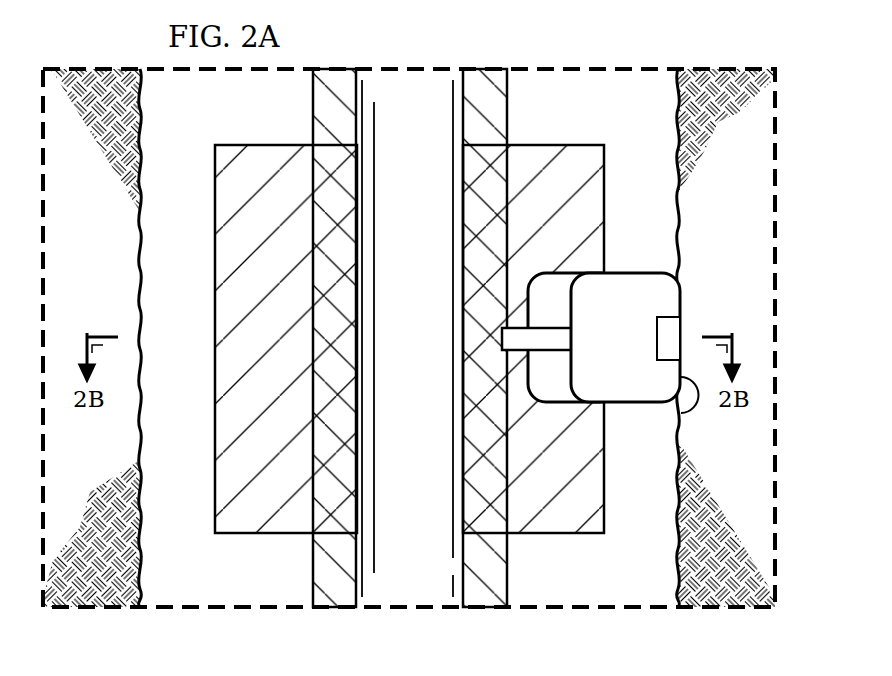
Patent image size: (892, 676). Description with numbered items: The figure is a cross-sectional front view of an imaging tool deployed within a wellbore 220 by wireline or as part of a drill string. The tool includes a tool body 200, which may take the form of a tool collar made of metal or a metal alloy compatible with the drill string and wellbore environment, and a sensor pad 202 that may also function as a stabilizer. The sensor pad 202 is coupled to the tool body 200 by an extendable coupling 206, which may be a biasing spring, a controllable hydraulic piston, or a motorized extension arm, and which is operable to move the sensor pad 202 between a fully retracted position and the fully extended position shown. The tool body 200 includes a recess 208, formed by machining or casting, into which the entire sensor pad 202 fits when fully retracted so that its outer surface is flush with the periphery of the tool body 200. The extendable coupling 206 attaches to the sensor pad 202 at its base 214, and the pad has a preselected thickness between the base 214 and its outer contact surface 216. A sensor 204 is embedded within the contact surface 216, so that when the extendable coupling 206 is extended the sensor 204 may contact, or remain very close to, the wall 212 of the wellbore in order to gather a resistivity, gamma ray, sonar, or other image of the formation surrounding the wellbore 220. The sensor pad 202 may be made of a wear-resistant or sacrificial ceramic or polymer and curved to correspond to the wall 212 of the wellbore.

The tool body 200 is at (534, 152).
The sensor pad 202 is at (633, 283).
The sensor 204 is at (672, 327).
The extendable coupling 206 is at (512, 338).
The recess 208 is at (547, 287).
The wall of the wellbore 212 is at (677, 557).
The base 214 is at (560, 373).
The contact surface 216 is at (677, 418).
The wellbore 220 is at (430, 353).